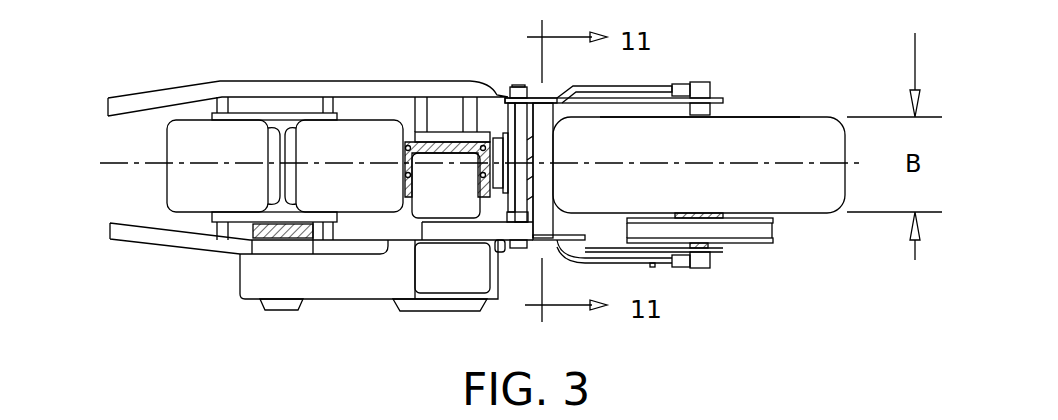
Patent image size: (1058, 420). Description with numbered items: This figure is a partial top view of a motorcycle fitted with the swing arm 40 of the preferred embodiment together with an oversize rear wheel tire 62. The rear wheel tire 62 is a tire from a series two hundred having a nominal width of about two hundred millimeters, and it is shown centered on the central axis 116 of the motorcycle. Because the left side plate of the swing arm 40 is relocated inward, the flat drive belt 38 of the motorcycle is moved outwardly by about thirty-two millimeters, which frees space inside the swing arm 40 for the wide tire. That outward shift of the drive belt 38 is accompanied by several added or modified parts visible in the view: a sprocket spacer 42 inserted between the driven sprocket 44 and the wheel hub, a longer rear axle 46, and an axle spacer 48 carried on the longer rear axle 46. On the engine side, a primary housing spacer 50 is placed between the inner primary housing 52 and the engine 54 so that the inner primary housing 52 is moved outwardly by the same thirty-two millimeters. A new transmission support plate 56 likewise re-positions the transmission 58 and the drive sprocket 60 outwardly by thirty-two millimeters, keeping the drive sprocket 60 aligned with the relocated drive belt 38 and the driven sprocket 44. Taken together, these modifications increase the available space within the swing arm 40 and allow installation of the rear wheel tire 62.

The flat drive belt 38 is at (772, 230).
The swing arm 40 is at (628, 85).
The sprocket spacer 42 is at (730, 223).
The driven sprocket 44 is at (763, 243).
The rear axle 46 is at (707, 268).
The axle spacer 48 is at (723, 247).
The primary housing spacer 50 is at (248, 230).
The inner primary housing 52 is at (330, 287).
The engine 54 is at (352, 128).
The transmission support plate 56 is at (433, 140).
The transmission 58 is at (452, 183).
The drive sprocket 60 is at (445, 230).
The rear wheel tire 62 is at (802, 127).
The central axis 116 is at (740, 163).